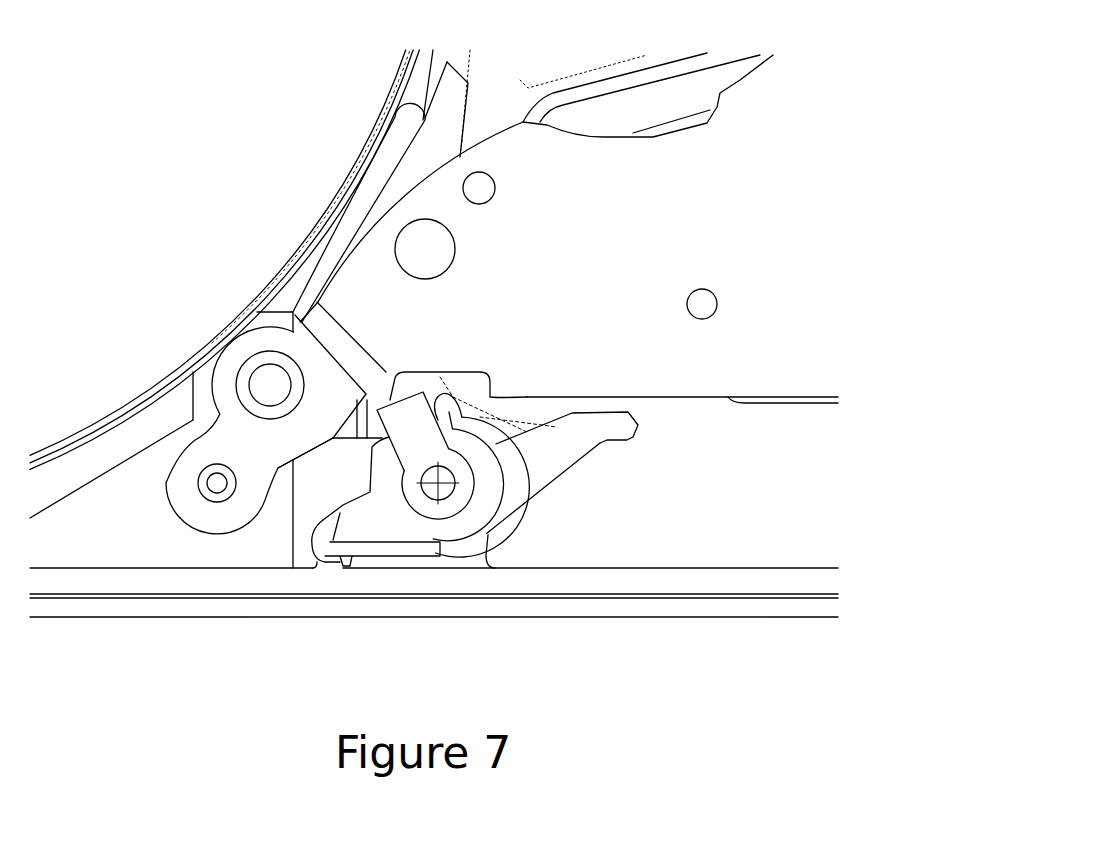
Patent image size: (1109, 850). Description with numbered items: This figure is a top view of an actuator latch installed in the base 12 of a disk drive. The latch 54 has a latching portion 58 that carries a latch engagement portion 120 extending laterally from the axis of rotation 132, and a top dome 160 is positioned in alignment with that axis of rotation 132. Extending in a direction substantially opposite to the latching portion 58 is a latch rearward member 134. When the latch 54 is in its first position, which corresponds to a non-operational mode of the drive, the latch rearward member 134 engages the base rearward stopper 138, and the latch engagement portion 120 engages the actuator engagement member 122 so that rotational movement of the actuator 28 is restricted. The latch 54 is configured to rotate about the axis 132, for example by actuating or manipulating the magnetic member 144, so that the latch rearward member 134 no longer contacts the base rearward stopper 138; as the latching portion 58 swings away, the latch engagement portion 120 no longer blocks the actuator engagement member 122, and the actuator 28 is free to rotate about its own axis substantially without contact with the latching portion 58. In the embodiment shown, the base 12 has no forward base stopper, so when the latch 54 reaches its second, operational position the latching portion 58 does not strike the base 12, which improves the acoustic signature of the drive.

The base 12 is at (744, 513).
The actuator 28 is at (743, 218).
The latch 54 is at (678, 436).
The latching portion 58 is at (572, 490).
The latch engagement portion 120 is at (572, 437).
The actuator engagement member 122 is at (493, 372).
The axis of rotation 132 is at (430, 468).
The latch rearward member 134 is at (313, 518).
The base rearward stopper 138 is at (350, 567).
The magnetic member 144 is at (390, 372).
The top dome 160 is at (452, 490).